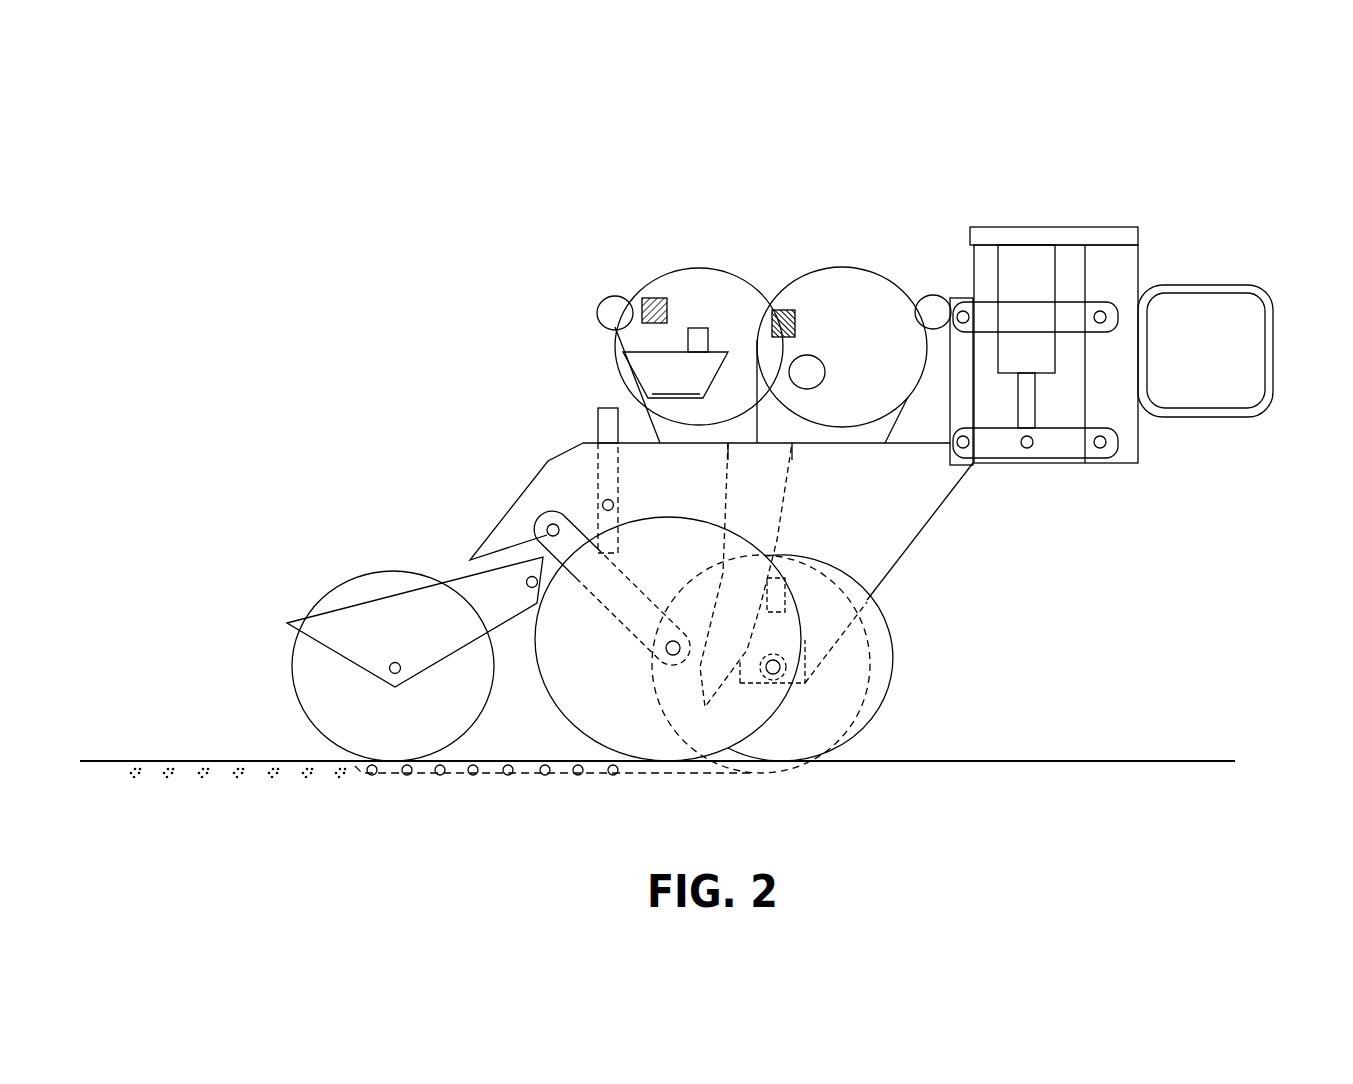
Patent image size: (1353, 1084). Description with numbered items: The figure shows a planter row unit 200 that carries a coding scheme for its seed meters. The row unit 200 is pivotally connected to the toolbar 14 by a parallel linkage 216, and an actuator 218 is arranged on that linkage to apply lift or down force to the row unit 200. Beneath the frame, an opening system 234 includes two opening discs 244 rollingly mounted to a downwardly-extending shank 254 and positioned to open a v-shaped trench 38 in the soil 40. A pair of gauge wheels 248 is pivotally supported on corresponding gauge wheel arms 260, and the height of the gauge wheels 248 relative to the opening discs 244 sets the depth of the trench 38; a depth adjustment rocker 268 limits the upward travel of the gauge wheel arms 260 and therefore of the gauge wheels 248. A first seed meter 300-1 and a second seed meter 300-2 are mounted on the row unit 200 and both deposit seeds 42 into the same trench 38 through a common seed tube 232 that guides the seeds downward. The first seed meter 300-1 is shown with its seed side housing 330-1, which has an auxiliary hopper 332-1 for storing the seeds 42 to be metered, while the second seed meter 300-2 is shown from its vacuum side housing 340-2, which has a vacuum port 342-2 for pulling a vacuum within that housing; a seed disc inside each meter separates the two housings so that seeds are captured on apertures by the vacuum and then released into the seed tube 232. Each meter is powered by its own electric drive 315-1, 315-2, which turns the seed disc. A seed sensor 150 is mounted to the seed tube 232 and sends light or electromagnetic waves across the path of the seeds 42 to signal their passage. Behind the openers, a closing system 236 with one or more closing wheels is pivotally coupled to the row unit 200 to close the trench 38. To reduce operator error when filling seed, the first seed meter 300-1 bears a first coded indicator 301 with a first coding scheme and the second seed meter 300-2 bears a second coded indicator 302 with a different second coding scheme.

The row unit 200 is at (1040, 169).
The toolbar 14 is at (1273, 358).
The actuator 218 is at (1026, 336).
The parallel linkage 216 is at (1054, 380).
The electric drive 315-1 is at (601, 302).
The electric drive 315-2 is at (946, 294).
The first coded indicator 301 is at (652, 297).
The second coded indicator 302 is at (779, 308).
The seed side housing 330-1 is at (699, 346).
The auxiliary hopper 332-1 is at (675, 363).
The vacuum side housing 340-2 is at (842, 347).
The vacuum port 342-2 is at (825, 364).
The first seed meter 300-1 is at (655, 322).
The second seed meter 300-2 is at (852, 314).
The depth adjustment rocker 268 is at (603, 488).
The seed tube 232 is at (783, 575).
The gauge wheel arm 260 is at (473, 555).
The closing system 236 is at (252, 609).
The gauge wheel 248 is at (668, 639).
The shank 254 is at (932, 522).
The seed sensor 150 is at (780, 600).
The opening system 234 is at (802, 645).
The opening disc 244 is at (810, 658).
The soil 40 is at (1097, 758).
The seeds 42 is at (553, 772).
The trench 38 is at (665, 773).